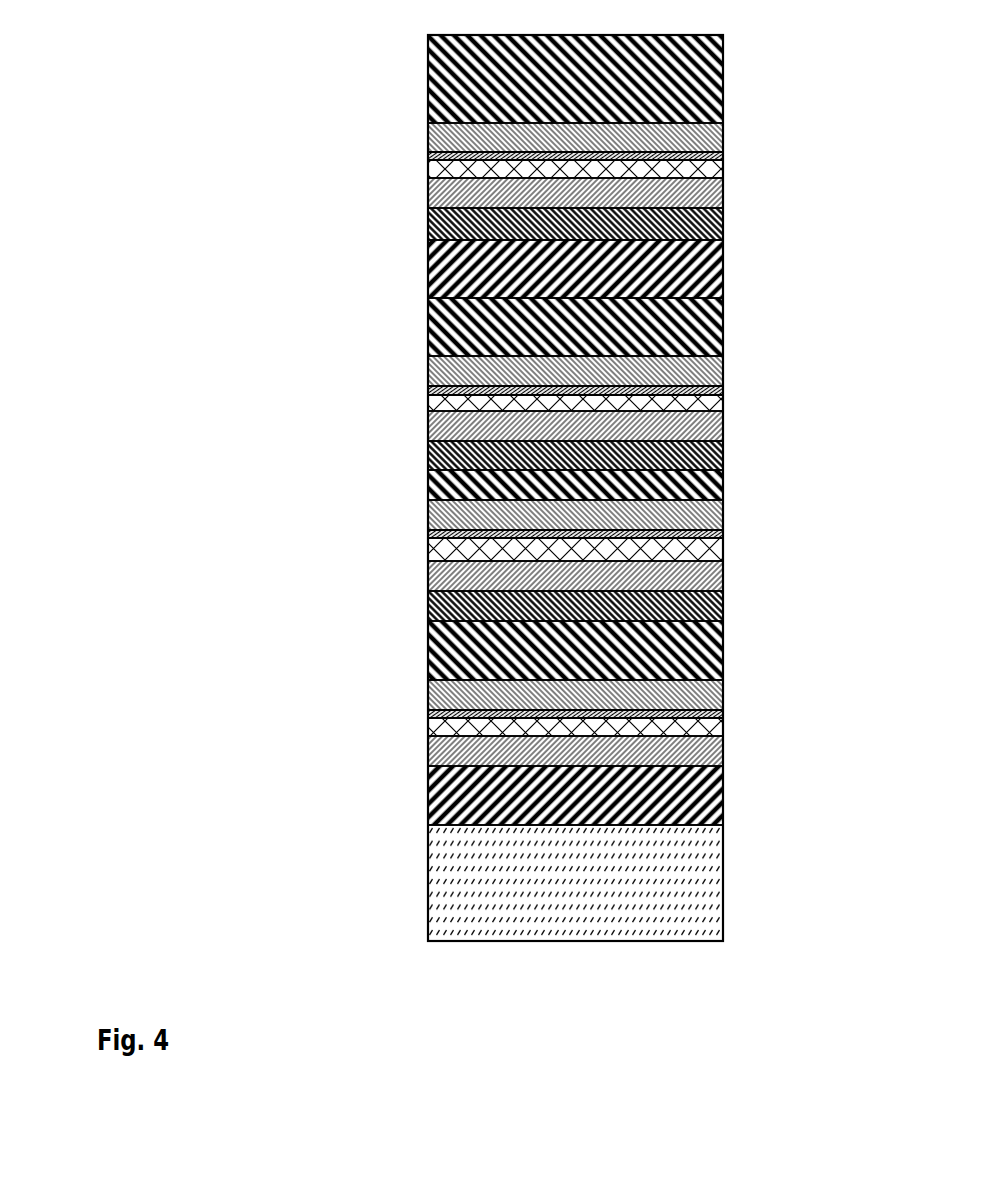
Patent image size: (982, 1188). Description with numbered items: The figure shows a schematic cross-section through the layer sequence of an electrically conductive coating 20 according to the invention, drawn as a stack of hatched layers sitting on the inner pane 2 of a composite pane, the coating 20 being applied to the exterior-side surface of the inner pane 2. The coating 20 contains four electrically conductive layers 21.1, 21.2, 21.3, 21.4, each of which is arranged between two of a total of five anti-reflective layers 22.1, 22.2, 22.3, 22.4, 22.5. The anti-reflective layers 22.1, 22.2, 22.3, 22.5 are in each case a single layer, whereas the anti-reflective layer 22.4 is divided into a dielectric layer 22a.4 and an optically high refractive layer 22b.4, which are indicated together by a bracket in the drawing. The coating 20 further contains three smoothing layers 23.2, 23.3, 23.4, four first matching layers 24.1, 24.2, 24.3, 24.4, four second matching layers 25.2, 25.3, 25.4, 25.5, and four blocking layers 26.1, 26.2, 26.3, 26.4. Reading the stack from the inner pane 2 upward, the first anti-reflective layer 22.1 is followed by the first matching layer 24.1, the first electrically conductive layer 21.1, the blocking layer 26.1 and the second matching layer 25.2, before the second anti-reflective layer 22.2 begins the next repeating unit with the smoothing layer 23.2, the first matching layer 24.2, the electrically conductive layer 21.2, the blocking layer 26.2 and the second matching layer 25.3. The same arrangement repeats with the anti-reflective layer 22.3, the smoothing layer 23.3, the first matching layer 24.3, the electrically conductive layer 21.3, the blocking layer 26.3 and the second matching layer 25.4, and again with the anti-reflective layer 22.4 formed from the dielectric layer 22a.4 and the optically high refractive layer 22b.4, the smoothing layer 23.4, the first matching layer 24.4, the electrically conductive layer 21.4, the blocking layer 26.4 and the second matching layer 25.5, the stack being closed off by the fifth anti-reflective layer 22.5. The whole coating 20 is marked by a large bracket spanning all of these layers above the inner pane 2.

The electrically conductive coating 20 is at (388, 25).
The inner pane 2 is at (683, 878).
The anti-reflective layer 22.5 is at (468, 82).
The anti-reflective layer 22.4 is at (407, 232).
The optically high refractive layer 22b.4 is at (658, 261).
The dielectric layer 22a.4 is at (658, 318).
The anti-reflective layer 22.3 is at (468, 477).
The anti-reflective layer 22.2 is at (468, 650).
The anti-reflective layer 22.1 is at (468, 788).
The second matching layer 25.5 is at (658, 127).
The second matching layer 25.4 is at (658, 360).
The second matching layer 25.3 is at (658, 504).
The second matching layer 25.2 is at (658, 687).
The blocking layer 26.4 is at (470, 148).
The blocking layer 26.3 is at (470, 383).
The blocking layer 26.2 is at (470, 525).
The blocking layer 26.1 is at (470, 706).
The electrically conductive layer 21.4 is at (658, 162).
The electrically conductive layer 21.3 is at (658, 395).
The electrically conductive layer 21.2 is at (658, 543).
The electrically conductive layer 21.1 is at (658, 717).
The first matching layer 24.4 is at (658, 185).
The first matching layer 24.3 is at (658, 420).
The first matching layer 24.2 is at (658, 568).
The first matching layer 24.1 is at (658, 747).
The smoothing layer 23.4 is at (658, 216).
The smoothing layer 23.3 is at (658, 447).
The smoothing layer 23.2 is at (658, 598).